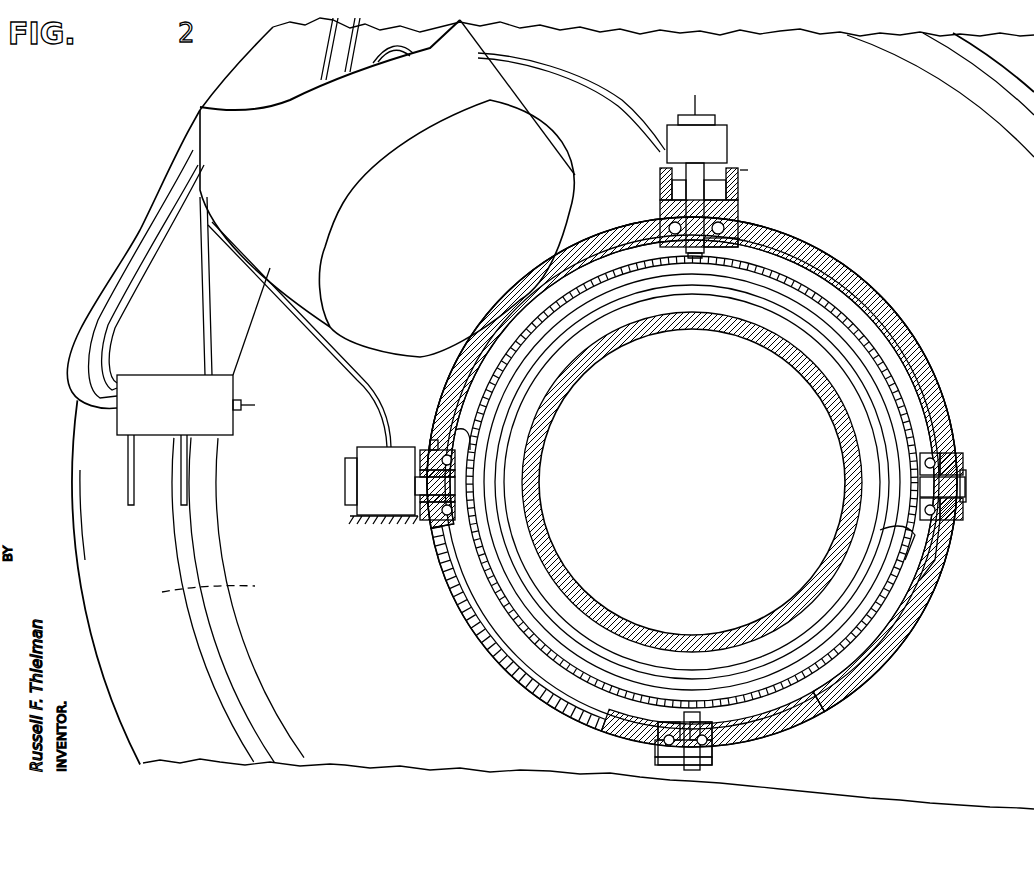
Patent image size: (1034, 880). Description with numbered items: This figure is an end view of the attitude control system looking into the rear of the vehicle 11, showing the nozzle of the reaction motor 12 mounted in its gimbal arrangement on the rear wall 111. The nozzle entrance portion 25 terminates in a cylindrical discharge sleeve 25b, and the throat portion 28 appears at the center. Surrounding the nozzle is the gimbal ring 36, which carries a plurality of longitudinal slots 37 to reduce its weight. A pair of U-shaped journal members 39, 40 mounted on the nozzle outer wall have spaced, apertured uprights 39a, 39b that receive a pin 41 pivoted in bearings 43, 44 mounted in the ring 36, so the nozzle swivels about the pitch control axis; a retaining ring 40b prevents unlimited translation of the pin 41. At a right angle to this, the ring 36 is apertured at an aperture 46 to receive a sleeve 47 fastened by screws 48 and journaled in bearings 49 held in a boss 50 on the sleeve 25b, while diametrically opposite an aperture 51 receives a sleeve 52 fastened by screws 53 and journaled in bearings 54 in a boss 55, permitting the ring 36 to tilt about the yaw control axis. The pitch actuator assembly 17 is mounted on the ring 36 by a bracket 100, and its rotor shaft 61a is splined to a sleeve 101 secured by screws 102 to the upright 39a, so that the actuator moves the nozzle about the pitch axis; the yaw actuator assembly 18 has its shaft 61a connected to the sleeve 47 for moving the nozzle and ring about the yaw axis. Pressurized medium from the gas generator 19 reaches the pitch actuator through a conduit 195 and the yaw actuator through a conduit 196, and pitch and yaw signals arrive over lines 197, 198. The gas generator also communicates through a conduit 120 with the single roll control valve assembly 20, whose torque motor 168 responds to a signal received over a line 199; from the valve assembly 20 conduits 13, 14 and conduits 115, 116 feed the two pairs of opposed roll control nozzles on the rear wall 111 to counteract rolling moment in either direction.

The vehicle 11 is at (92, 624).
The rear wall 111 is at (98, 582).
The reaction motor 12 is at (198, 615).
The conduit 13 is at (323, 48).
The conduit 14 is at (362, 30).
The actuator assembly 17 is at (742, 140).
The actuator assembly 18 is at (356, 522).
The gas generator 19 is at (183, 128).
The valve assembly 20 is at (102, 430).
The nozzle entrance portion 25 is at (162, 591).
The discharge sleeve 25b is at (488, 386).
The throat portion 28 is at (792, 370).
The gimbal ring 36 is at (452, 612).
The longitudinal slots 37 is at (496, 680).
The U-shaped journal member 39 is at (662, 720).
The upright 39a is at (674, 195).
The upright 39b is at (722, 246).
The U-shaped journal member 40 is at (668, 262).
The retaining ring 40b is at (695, 258).
The pin 41 is at (745, 205).
The bearing 43 is at (656, 748).
The bearing 44 is at (656, 240).
The aperture 46 is at (430, 470).
The sleeve 47 is at (437, 450).
The screws 48 is at (405, 518).
The bearings 49 is at (430, 520).
The boss 50 is at (463, 428).
The aperture 51 is at (958, 520).
The sleeve 52 is at (950, 455).
The screws 53 is at (967, 470).
The bearings 54 is at (940, 535).
The boss 55 is at (912, 532).
The rotor shaft 61a is at (748, 170).
The bracket 100 is at (740, 178).
The sleeve 101 is at (742, 186).
The screws 102 is at (662, 168).
The conduit 115 is at (128, 462).
The conduit 116 is at (187, 460).
The conduit 120 is at (205, 320).
The torque motor 168 is at (242, 412).
The conduit 195 is at (612, 92).
The conduit 196 is at (332, 386).
The line 197 is at (700, 100).
The line 198 is at (340, 482).
The line 199 is at (242, 405).